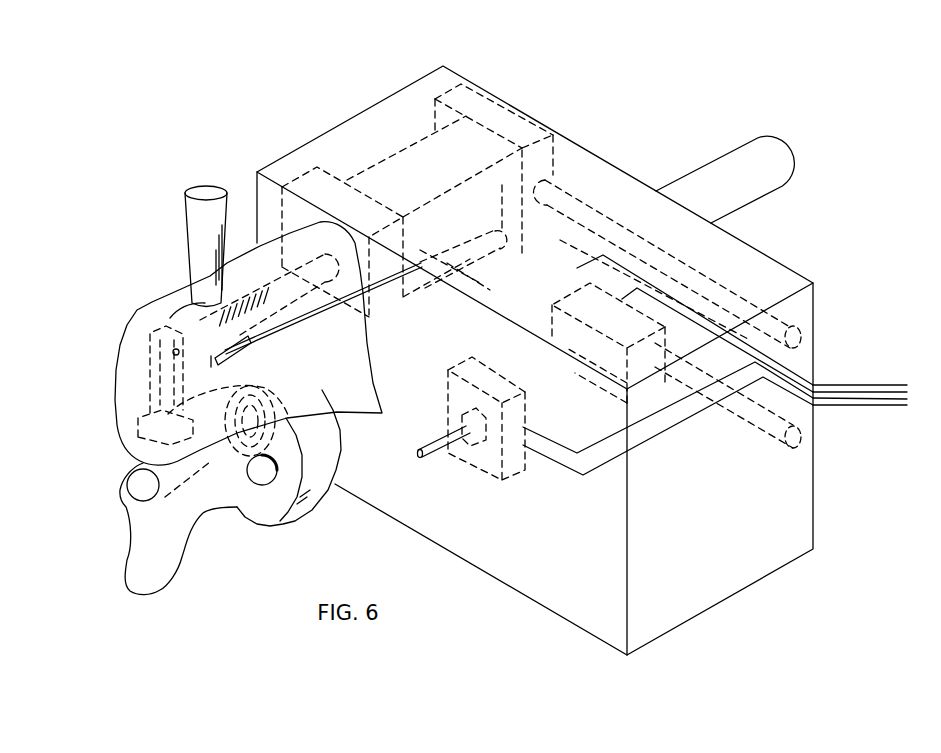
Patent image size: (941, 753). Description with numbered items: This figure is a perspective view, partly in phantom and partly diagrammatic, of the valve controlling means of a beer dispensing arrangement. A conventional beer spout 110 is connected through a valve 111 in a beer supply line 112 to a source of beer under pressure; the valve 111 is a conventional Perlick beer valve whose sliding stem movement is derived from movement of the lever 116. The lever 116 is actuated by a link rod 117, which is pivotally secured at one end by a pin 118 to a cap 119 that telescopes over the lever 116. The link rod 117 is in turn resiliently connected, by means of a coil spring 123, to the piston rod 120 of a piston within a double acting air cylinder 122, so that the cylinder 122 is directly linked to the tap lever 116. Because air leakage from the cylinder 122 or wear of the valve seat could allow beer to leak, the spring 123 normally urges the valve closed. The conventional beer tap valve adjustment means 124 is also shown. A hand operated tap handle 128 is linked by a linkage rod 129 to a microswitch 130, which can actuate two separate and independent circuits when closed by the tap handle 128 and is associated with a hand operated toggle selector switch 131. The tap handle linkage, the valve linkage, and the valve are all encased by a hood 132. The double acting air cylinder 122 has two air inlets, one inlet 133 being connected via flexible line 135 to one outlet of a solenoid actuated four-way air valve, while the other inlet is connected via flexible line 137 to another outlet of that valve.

The beer spout 110 is at (172, 588).
The valve 111 is at (152, 438).
The beer supply line 112 is at (778, 177).
The lever 116 is at (156, 417).
The link rod 117 is at (193, 337).
The pin 118 is at (173, 352).
The cap 119 is at (152, 382).
The piston rod 120 is at (280, 283).
The double acting air cylinder 122 is at (428, 188).
The coil spring 123 is at (248, 308).
The beer tap valve adjustment means 124 is at (264, 477).
The tap handle 128 is at (206, 187).
The linkage rod 129 is at (309, 316).
The microswitch 130 is at (611, 318).
The toggle selector switch 131 is at (429, 456).
The hood 132 is at (362, 398).
The air inlet 133 is at (546, 183).
The flexible line 135 is at (800, 338).
The flexible line 137 is at (800, 440).